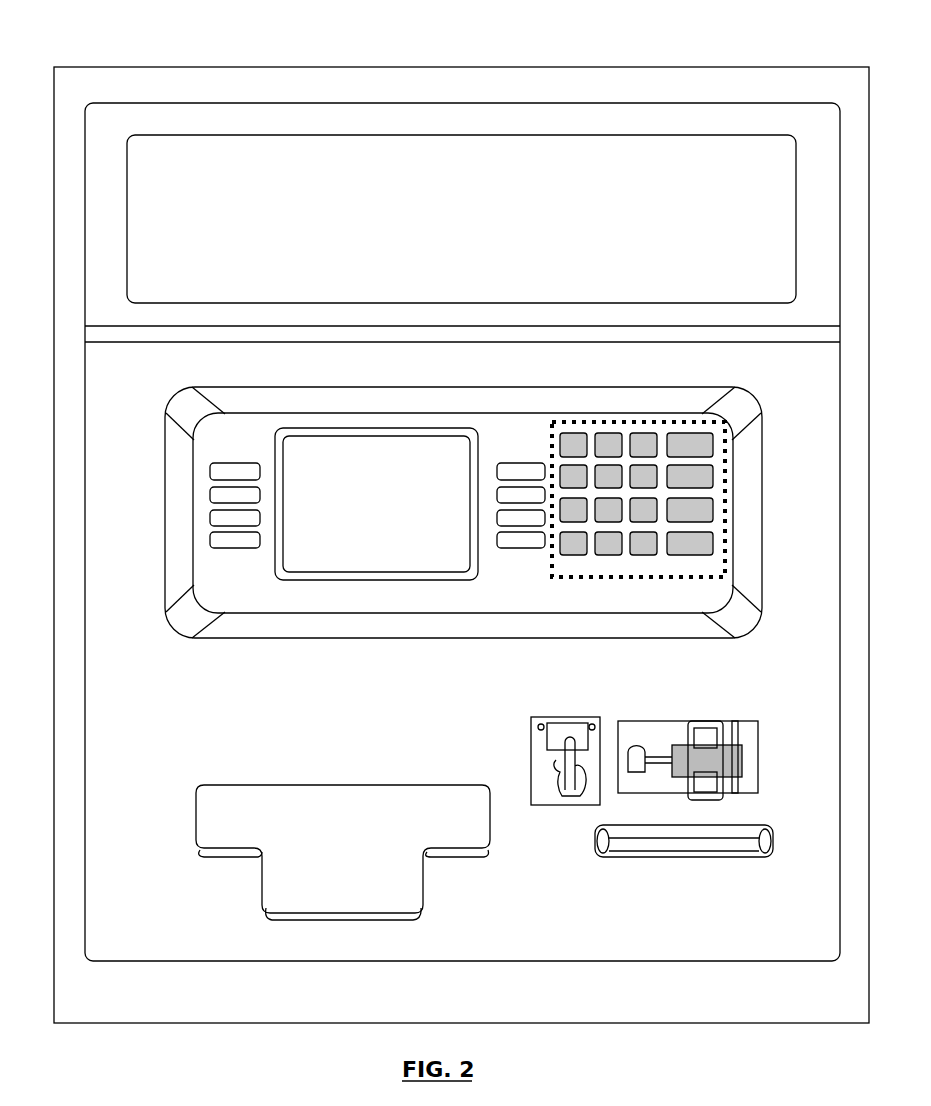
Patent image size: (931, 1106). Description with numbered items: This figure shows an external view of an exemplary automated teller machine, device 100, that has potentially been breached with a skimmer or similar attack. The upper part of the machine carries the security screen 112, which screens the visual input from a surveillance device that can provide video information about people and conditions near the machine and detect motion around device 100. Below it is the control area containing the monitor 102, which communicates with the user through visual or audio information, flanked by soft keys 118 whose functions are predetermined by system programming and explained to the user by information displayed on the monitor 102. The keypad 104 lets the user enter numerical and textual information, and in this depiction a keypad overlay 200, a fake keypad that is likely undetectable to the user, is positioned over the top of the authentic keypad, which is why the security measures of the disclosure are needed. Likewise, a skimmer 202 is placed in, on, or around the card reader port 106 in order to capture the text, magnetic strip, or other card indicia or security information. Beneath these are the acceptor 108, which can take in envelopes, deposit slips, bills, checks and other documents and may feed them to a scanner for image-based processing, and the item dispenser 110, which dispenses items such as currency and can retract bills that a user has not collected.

The device 100 is at (460, 36).
The monitor 102 is at (408, 432).
The keypad 104 is at (515, 595).
The card reader port 106 is at (758, 720).
The acceptor 108 is at (753, 825).
The item dispenser 110 is at (223, 785).
The security screen 112 is at (708, 133).
The soft keys 118 is at (238, 450).
The keypad overlay 200 is at (638, 558).
The skimmer 202 is at (669, 696).